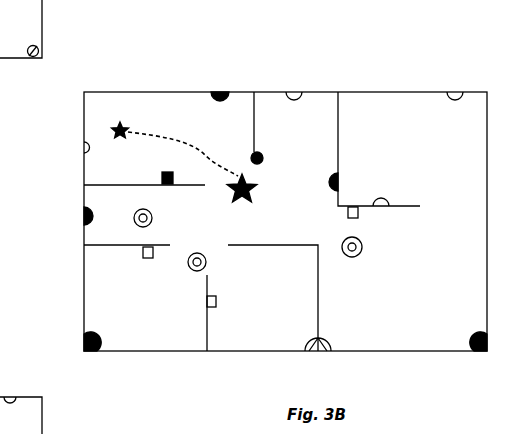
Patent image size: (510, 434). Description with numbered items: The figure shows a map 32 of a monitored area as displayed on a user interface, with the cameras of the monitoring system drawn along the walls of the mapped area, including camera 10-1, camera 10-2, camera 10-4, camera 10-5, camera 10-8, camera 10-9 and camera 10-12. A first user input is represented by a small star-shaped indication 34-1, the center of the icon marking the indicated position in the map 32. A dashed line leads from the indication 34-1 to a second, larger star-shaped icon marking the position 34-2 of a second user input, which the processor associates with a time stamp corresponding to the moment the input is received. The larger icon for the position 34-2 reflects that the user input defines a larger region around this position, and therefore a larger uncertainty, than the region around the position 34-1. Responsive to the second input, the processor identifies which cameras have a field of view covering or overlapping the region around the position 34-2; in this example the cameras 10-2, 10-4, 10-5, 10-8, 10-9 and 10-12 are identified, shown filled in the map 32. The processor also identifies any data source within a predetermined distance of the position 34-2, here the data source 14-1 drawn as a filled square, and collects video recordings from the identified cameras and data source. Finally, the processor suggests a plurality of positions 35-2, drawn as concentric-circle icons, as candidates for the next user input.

The map 32 is at (132, 92).
The camera 10-1 is at (82, 146).
The camera 10-2 is at (218, 90).
The camera 10-4 is at (253, 154).
The camera 10-5 is at (336, 182).
The camera 10-8 is at (82, 216).
The camera 10-9 is at (84, 343).
The camera 10-12 is at (478, 343).
The data source 14-1 is at (170, 184).
The indication of a position 34-1 is at (118, 138).
The position 34-2 is at (238, 201).
The suggested positions 35-2 is at (137, 224).